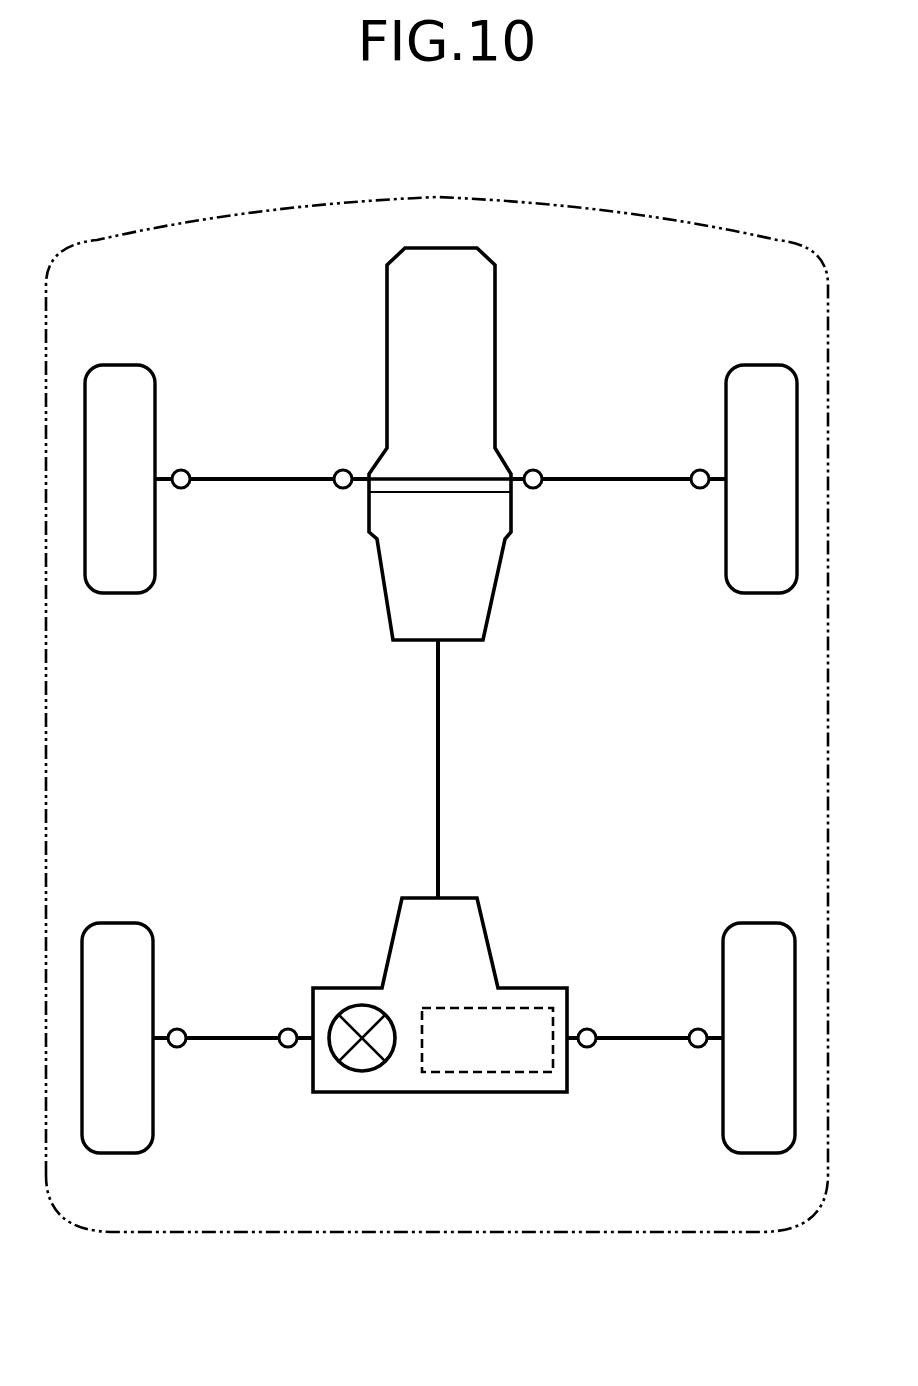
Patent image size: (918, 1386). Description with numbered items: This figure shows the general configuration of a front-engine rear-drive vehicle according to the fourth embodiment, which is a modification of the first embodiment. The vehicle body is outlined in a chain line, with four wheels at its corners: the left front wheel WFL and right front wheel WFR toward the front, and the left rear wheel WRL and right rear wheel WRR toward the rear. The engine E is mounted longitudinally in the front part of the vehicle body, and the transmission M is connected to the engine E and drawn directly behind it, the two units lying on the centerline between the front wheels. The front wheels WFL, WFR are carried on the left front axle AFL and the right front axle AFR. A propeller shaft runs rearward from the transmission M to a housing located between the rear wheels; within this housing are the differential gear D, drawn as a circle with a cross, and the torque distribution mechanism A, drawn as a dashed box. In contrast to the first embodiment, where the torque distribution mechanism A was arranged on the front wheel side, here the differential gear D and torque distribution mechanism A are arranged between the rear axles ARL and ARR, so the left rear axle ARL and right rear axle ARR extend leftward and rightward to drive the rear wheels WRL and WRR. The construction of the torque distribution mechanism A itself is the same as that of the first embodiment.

The engine E is at (431, 361).
The transmission M is at (456, 572).
The torque distribution mechanism A is at (483, 1058).
The differential device D is at (357, 1060).
The left front wheel WFL is at (110, 577).
The right front wheel WFR is at (765, 580).
The left rear wheel WRL is at (113, 947).
The right rear wheel WRR is at (757, 950).
The left front axle AFL is at (258, 478).
The right front axle AFR is at (657, 478).
The left rear axle ARL is at (240, 1040).
The right rear axle ARR is at (637, 1043).